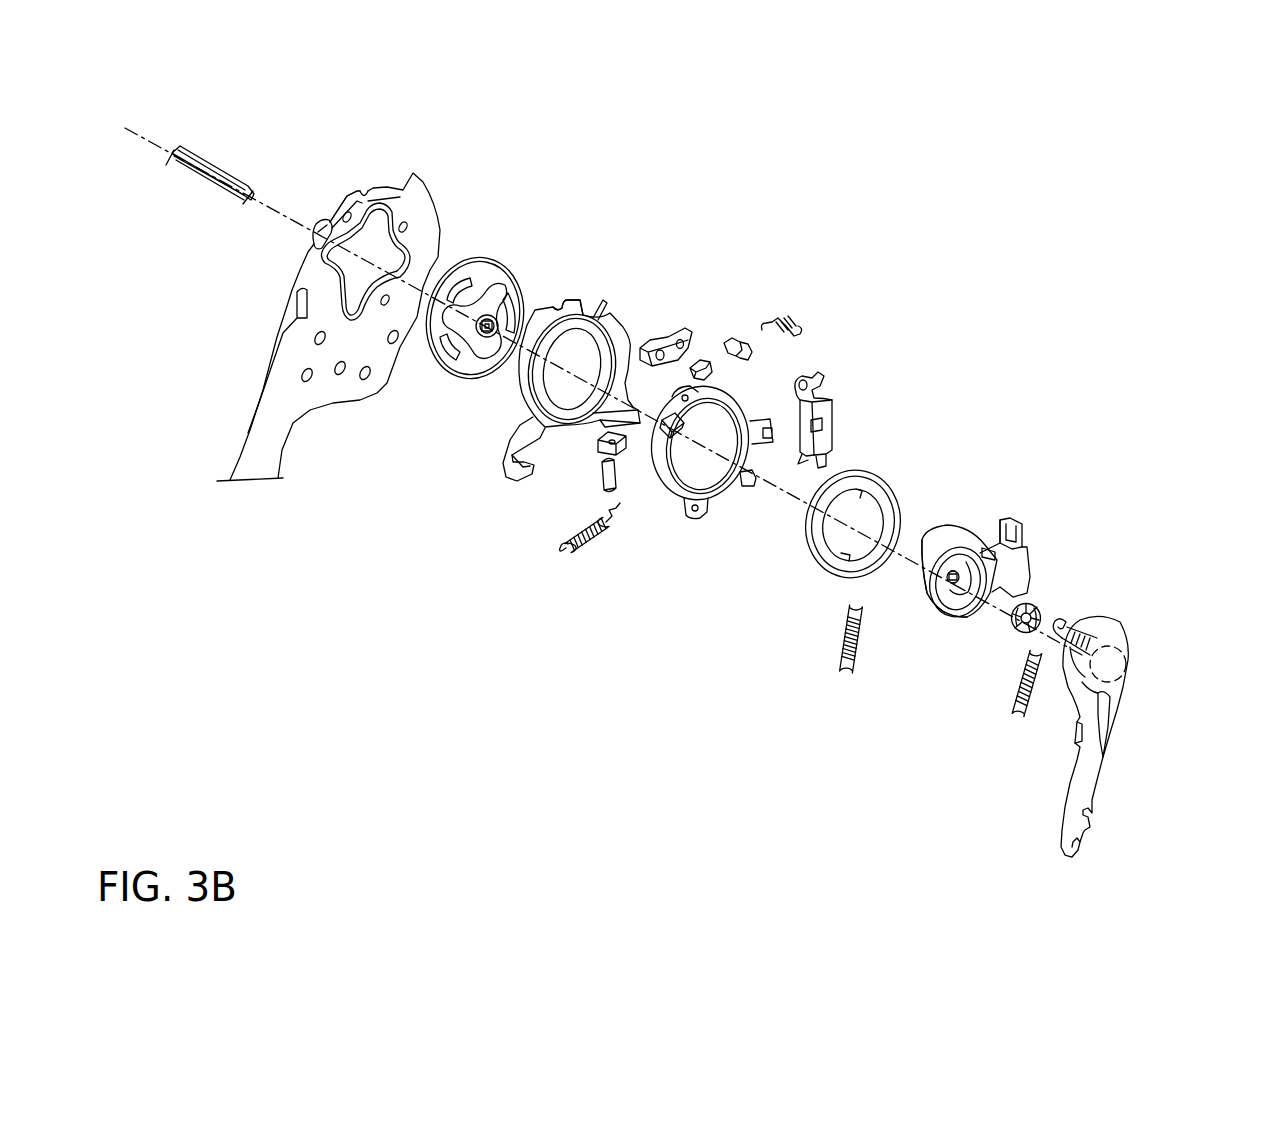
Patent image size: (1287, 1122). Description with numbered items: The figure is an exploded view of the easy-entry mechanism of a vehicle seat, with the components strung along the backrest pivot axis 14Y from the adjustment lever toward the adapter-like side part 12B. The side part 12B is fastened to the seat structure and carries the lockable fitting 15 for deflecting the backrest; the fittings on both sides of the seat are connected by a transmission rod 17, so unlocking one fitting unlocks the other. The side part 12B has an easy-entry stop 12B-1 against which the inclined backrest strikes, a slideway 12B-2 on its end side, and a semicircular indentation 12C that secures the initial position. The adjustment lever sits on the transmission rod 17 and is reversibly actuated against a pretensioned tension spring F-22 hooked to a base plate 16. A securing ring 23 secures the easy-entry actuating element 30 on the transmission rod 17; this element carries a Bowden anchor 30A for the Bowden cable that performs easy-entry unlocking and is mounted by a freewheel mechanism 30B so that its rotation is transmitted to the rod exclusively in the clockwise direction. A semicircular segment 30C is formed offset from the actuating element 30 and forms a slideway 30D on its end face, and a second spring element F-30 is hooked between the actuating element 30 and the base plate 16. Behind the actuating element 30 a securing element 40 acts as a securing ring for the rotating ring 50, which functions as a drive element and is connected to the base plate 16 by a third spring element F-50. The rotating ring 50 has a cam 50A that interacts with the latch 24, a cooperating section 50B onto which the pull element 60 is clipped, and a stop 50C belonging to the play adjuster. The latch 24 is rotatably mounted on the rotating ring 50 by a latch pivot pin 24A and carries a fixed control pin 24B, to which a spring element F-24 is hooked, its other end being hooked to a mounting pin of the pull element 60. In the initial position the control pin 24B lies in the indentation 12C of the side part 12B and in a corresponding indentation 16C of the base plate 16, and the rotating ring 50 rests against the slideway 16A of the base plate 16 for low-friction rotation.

The backrest pivot axis 14Y is at (142, 138).
The transmission rod 17 is at (216, 170).
The side part 12B is at (417, 205).
The easy-entry stop 12B-1 is at (315, 218).
The slideway 12B-2 is at (344, 195).
The semicircular indentation 12C is at (365, 193).
The lockable fitting 15 is at (490, 259).
The base plate 16 is at (550, 363).
The slideway 16A is at (534, 399).
The indentation 16C is at (562, 305).
The latch 24 is at (672, 329).
The latch pivot pin 24A is at (704, 358).
The control pin 24B is at (745, 342).
The third spring element F-24 is at (784, 323).
The rotating ring 50 is at (692, 483).
The cam 50A is at (670, 442).
The cooperating section 50B is at (762, 423).
The stop 50C is at (749, 490).
The third spring element F-50 is at (572, 546).
The pull element 60 is at (835, 421).
The securing element 40 is at (864, 475).
The easy-entry actuating element 30 is at (990, 556).
The Bowden anchor 30A is at (1020, 528).
The freewheel mechanism 30B is at (948, 590).
The semicircular segment 30C is at (970, 523).
The slideway 30D is at (931, 528).
The securing ring 23 is at (1037, 611).
The second spring element F-30 is at (851, 642).
The tension spring F-22 is at (1020, 697).